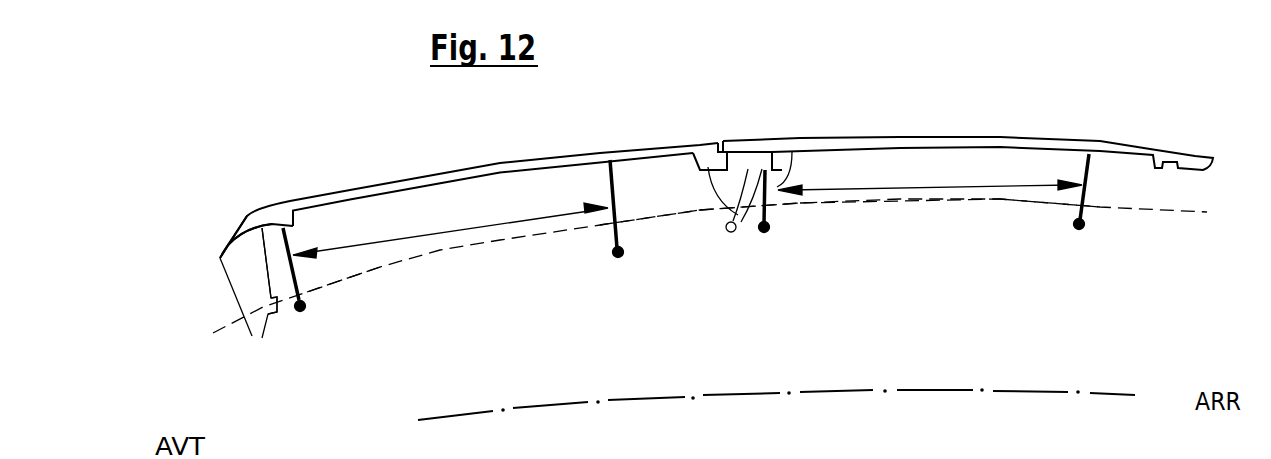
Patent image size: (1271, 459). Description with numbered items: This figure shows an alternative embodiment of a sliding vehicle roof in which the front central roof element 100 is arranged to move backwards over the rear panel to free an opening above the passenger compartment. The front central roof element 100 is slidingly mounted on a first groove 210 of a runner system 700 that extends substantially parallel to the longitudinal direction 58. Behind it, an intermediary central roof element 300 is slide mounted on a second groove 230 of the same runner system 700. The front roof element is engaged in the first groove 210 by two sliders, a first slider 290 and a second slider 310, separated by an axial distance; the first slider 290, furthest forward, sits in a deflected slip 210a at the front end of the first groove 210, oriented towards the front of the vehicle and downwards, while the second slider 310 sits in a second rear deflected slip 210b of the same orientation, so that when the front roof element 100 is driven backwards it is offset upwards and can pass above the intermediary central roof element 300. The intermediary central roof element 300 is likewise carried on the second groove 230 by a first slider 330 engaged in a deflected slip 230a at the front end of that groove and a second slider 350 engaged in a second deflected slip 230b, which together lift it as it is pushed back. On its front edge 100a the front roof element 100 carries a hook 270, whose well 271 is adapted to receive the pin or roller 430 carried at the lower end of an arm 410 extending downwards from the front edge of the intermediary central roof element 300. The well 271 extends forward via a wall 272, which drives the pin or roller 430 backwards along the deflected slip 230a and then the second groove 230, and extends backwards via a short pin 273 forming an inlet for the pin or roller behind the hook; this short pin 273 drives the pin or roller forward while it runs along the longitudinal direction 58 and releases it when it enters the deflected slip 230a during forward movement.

The front central roof element 100 is at (365, 188).
The front edge 100a is at (220, 257).
The short pin 273 is at (277, 233).
The hook 270 is at (240, 288).
The well 271 is at (265, 333).
The wall 272 is at (257, 347).
The first slider 290 is at (301, 313).
The first groove 210 is at (449, 250).
The deflected slip 210a is at (343, 280).
The second rear deflected slip 210b is at (642, 222).
The runner system 700 is at (519, 250).
The second slider 310 is at (619, 257).
The arm 410 is at (705, 145).
The intermediary central roof element 300 is at (945, 137).
The first slider 330 is at (793, 147).
The pin or roller 430 is at (730, 235).
The second slider 350 is at (1090, 153).
The second groove 230 is at (906, 201).
The deflected slip 230a is at (786, 216).
The second deflected slip 230b is at (1094, 210).
The longitudinal direction 58 is at (712, 395).